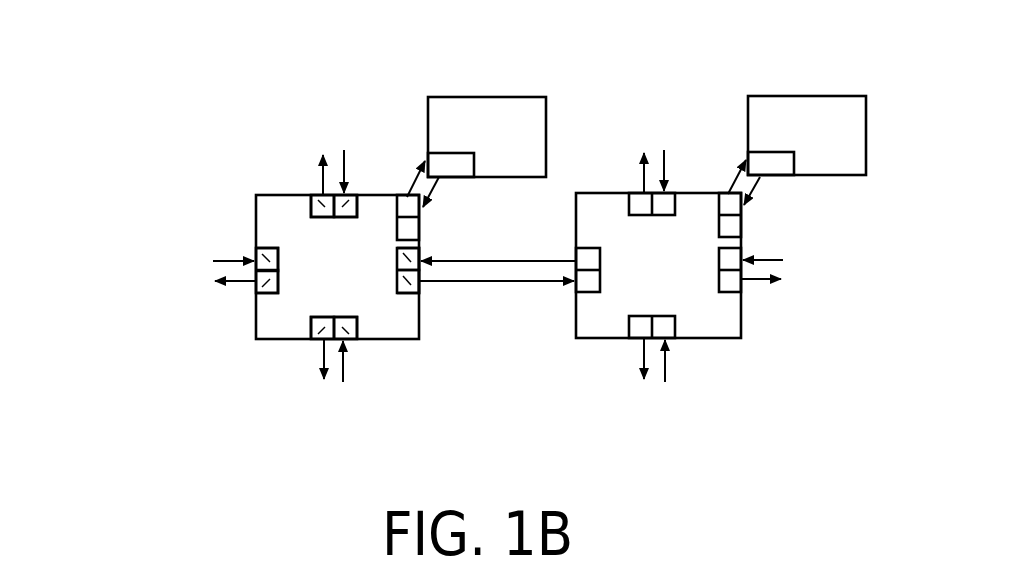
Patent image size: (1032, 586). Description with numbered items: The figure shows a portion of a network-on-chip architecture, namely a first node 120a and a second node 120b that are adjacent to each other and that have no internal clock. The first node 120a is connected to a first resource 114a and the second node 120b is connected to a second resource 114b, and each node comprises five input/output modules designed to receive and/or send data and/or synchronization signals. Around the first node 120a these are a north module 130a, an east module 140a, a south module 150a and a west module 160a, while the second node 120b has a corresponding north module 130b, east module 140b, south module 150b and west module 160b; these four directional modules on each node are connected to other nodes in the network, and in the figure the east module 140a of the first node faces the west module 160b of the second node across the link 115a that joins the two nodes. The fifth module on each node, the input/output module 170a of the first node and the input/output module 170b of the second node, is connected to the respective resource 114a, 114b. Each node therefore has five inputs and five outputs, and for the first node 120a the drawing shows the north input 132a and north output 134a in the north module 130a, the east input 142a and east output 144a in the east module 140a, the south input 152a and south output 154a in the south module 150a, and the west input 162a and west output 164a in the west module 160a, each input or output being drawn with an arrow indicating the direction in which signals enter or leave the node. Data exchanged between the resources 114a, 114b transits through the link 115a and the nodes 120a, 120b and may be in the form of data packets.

The first resource 114a is at (473, 117).
The second resource 114b is at (793, 114).
The link 115a is at (541, 258).
The first node 120a is at (262, 346).
The second node 120b is at (736, 343).
The north module 130a is at (331, 145).
The north module 130b is at (673, 187).
The input 132a is at (350, 196).
The output 134a is at (318, 196).
The east module 140a is at (487, 328).
The east module 140b is at (734, 295).
The input 142a is at (418, 266).
The output 144a is at (442, 317).
The south module 150a is at (331, 393).
The south module 150b is at (636, 348).
The input 152a is at (373, 368).
The output 154a is at (318, 338).
The west module 160a is at (181, 271).
The west module 160b is at (584, 246).
The input 162a is at (262, 256).
The output 164a is at (222, 307).
The input/output module 170a is at (423, 226).
The input/output module 170b is at (744, 225).